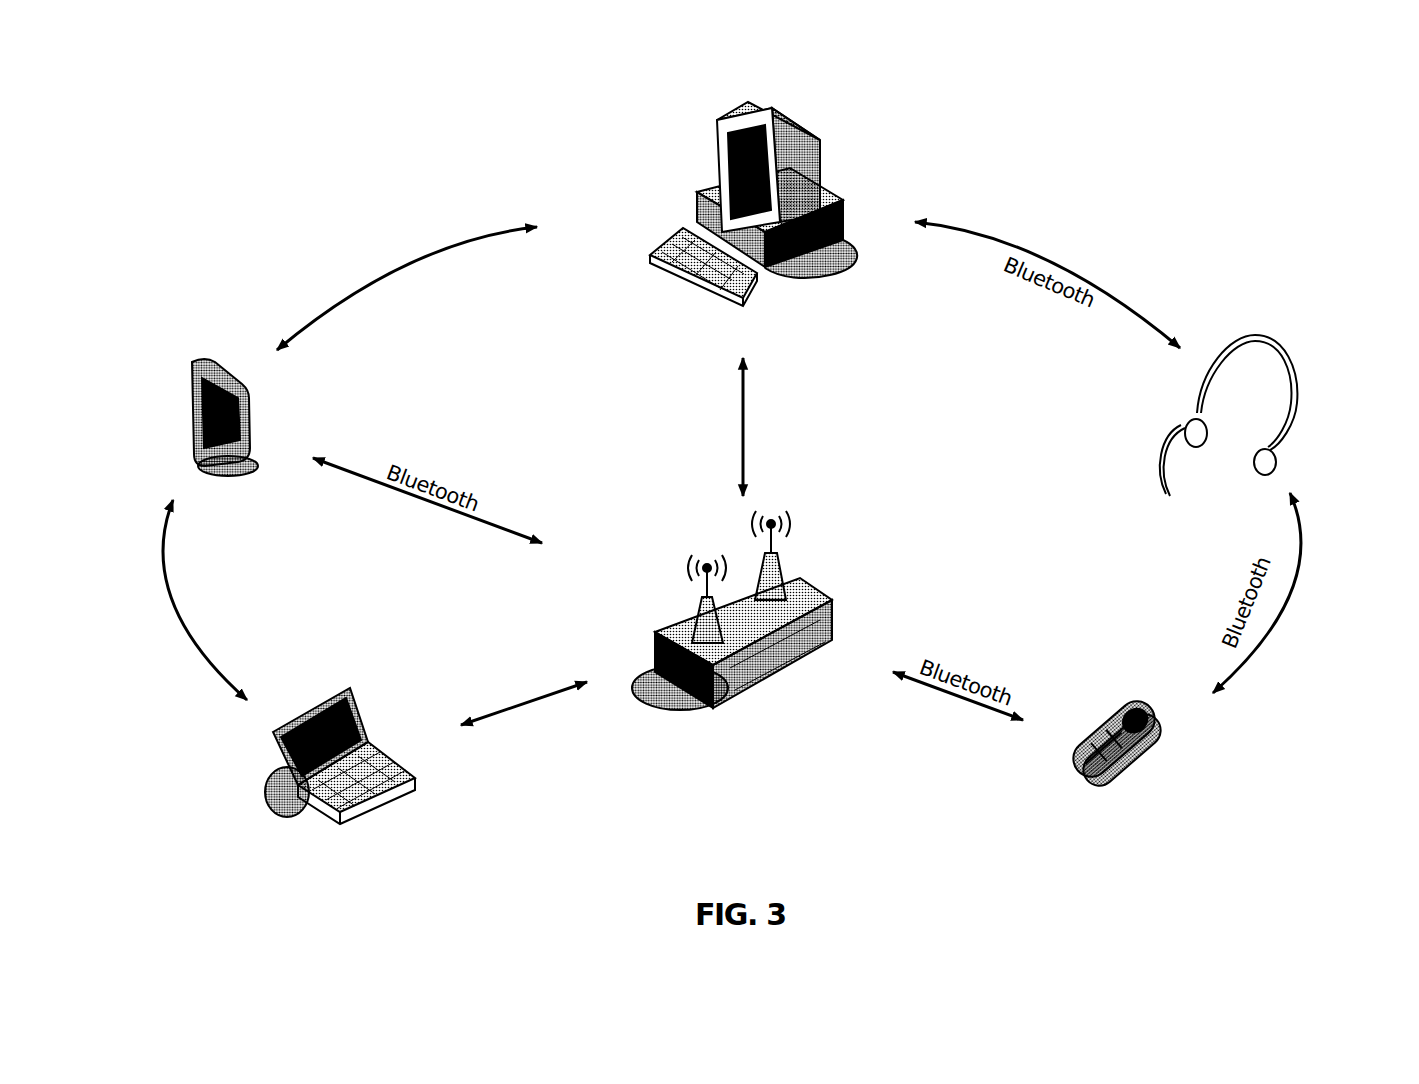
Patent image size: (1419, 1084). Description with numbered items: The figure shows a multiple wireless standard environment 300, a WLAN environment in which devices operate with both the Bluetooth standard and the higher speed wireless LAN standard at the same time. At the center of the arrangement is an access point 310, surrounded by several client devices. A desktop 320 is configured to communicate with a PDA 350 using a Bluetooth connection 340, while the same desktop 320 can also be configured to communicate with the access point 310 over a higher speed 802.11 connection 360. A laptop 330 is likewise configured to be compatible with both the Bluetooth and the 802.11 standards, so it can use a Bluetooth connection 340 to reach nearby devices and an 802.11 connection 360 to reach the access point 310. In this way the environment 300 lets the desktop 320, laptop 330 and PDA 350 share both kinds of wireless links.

The multiple wireless standard environment 300 is at (1288, 149).
The access point 310 is at (833, 606).
The desktop 320 is at (843, 209).
The laptop 330 is at (282, 808).
The Bluetooth connection 340 is at (309, 309).
The PDA 350 is at (190, 410).
The 802.11 connection 360 is at (741, 428).